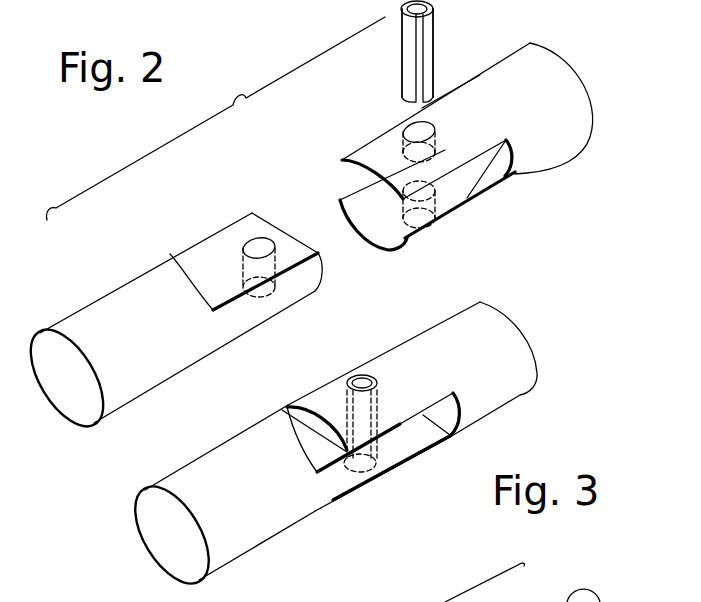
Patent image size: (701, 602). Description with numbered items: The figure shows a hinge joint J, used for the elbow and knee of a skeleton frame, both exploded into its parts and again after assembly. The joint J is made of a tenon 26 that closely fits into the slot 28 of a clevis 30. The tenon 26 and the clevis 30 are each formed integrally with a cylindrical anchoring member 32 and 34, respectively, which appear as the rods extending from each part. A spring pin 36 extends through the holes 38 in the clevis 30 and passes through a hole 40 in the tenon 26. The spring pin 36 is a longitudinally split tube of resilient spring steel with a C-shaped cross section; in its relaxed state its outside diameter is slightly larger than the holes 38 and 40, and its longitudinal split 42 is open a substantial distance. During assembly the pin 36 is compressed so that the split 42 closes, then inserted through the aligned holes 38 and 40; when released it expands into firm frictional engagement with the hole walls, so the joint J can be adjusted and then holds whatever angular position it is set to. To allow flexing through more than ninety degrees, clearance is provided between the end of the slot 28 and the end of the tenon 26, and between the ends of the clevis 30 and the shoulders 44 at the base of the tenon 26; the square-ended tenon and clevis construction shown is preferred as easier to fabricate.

In FIG. 2, the tenon 26 is at (283, 308).
In FIG. 3, the tenon 26 is at (405, 452).
In FIG. 2, the slot 28 is at (519, 155).
In FIG. 3, the slot 28 is at (449, 437).
In FIG. 2, the clevis 30 is at (480, 198).
In FIG. 3, the clevis 30 is at (400, 350).
In FIG. 2, the cylindrical anchoring member 32 is at (127, 401).
In FIG. 3, the cylindrical anchoring member 32 is at (224, 565).
In FIG. 2, the cylindrical anchoring member 34 is at (586, 128).
In FIG. 3, the cylindrical anchoring member 34 is at (518, 394).
In FIG. 2, the spring pin 36 is at (433, 19).
In FIG. 3, the spring pin 36 is at (348, 380).
In FIG. 2, the holes 38 is at (428, 126).
In FIG. 2, the hole 40 is at (247, 242).
In FIG. 2, the longitudinal split 42 is at (422, 60).
In FIG. 2, the shoulders 44 is at (185, 268).
In FIG. 3, the shoulders 44 is at (283, 424).
In FIG. 2, the hinge joint J is at (539, 226).
In FIG. 3, the hinge joint J is at (391, 487).